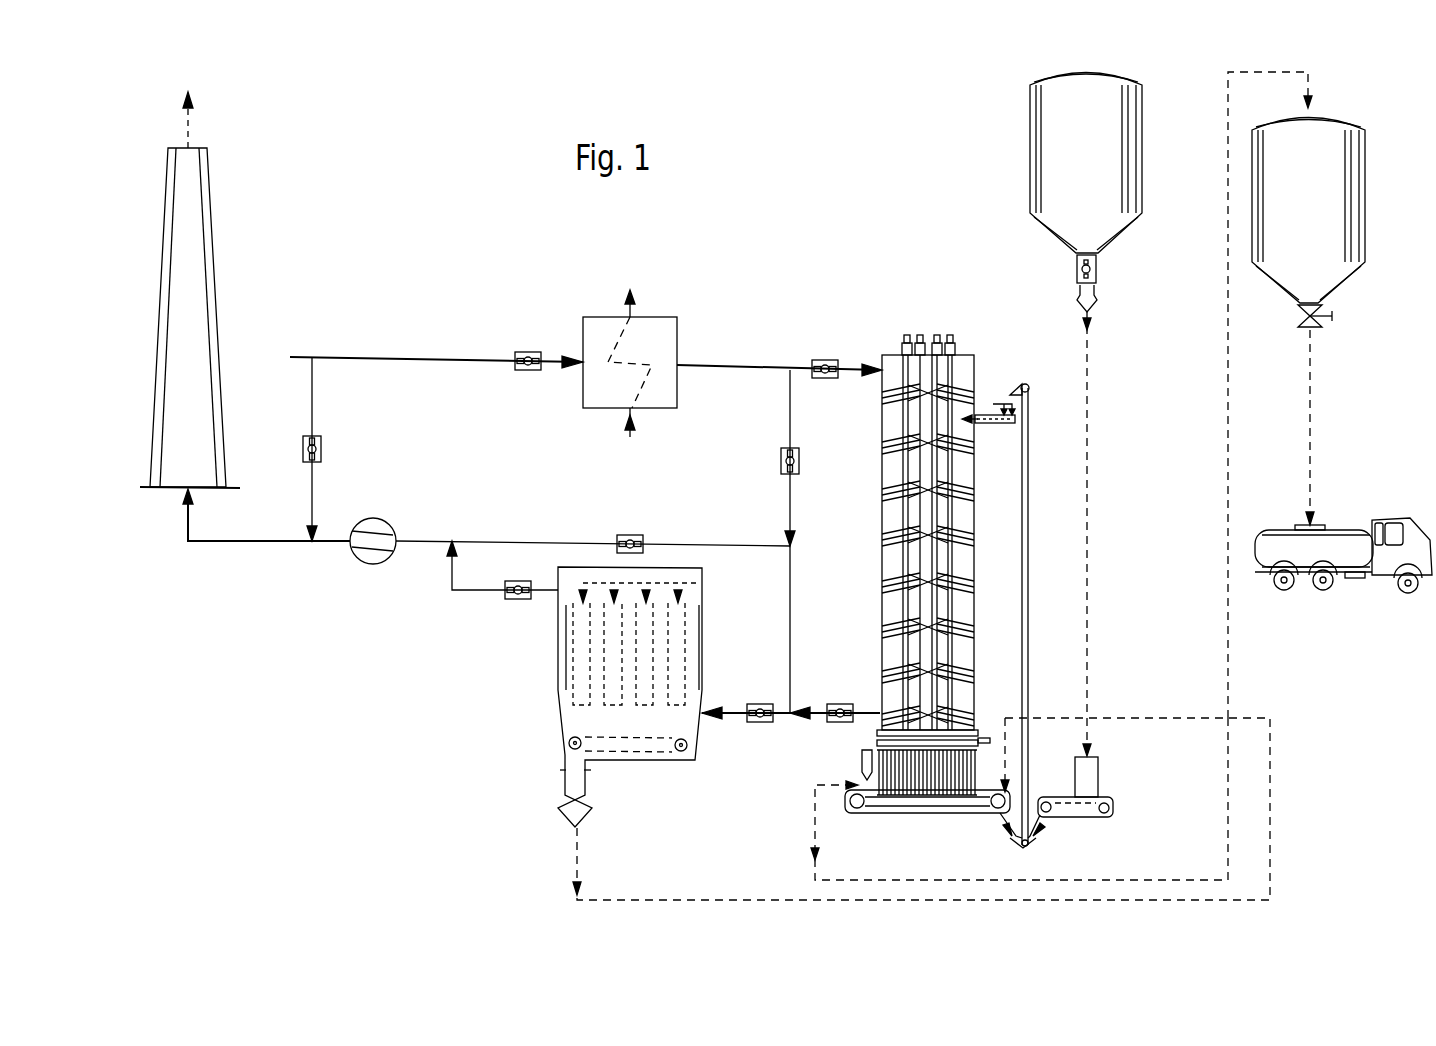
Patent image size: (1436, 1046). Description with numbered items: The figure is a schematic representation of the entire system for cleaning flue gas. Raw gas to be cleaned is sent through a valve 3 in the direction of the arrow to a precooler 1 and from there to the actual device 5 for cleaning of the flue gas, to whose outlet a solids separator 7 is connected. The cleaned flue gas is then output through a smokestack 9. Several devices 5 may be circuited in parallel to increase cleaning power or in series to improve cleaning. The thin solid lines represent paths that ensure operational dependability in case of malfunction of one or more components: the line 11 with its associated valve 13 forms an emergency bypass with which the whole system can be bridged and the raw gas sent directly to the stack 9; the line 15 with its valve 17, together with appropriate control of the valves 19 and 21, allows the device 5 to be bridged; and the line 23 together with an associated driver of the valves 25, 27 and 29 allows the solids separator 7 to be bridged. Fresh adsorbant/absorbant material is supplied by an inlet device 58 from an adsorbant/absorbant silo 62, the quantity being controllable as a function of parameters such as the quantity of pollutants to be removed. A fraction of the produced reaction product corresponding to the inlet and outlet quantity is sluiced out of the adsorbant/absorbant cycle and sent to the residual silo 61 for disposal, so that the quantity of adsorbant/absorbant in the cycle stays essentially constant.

The precooler 1 is at (677, 322).
The valve 3 is at (528, 372).
The device for cleaning of the flue gas 5 is at (984, 340).
The solids separator 7 is at (558, 688).
The smokestack 9 is at (210, 232).
The line 11 is at (312, 383).
The valve 13 is at (322, 450).
The line 15 is at (790, 518).
The valve 17 is at (782, 462).
The valve 19 is at (824, 357).
The valve 21 is at (838, 701).
The line 23 is at (530, 541).
The valve 25 is at (628, 535).
The valve 27 is at (760, 701).
The valve 29 is at (512, 602).
The inlet device 58 is at (1121, 790).
The residual silo 61 is at (1296, 395).
The adsorbant/absorbant silo 62 is at (1086, 415).